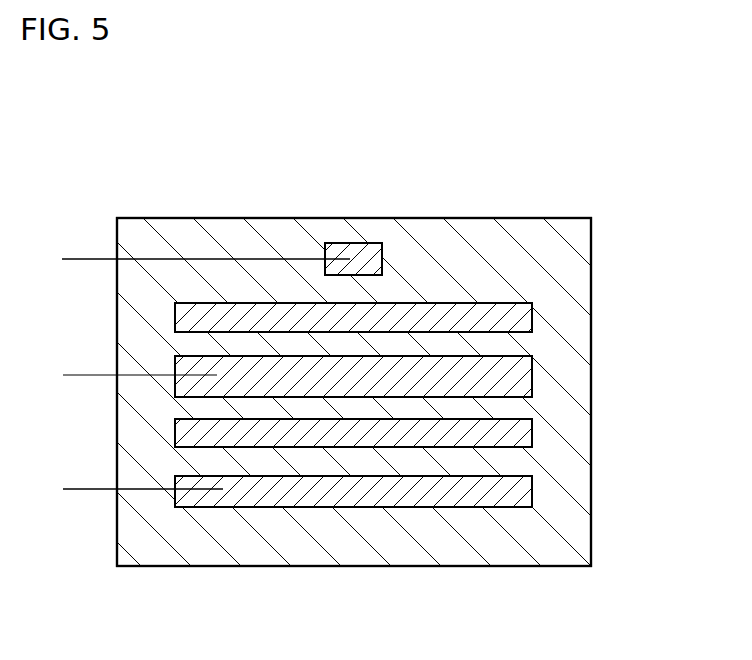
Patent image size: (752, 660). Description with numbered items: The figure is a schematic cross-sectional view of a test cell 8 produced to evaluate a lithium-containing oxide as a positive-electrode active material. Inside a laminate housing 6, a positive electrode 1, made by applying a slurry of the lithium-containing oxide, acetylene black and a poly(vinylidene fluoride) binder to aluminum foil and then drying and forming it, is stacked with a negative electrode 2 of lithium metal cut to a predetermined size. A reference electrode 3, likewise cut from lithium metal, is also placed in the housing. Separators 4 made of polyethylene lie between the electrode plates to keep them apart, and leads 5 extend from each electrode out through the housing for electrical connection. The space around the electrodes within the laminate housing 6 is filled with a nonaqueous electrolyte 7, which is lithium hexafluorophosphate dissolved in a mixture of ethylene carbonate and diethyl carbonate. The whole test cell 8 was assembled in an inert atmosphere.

The positive electrode 1 is at (534, 372).
The negative electrode 2 is at (534, 487).
The reference electrode 3 is at (383, 250).
The separators 4 is at (534, 313).
The leads 5 is at (94, 257).
The laminate housing 6 is at (592, 243).
The nonaqueous electrolyte 7 is at (495, 263).
The test cell 8 is at (602, 156).